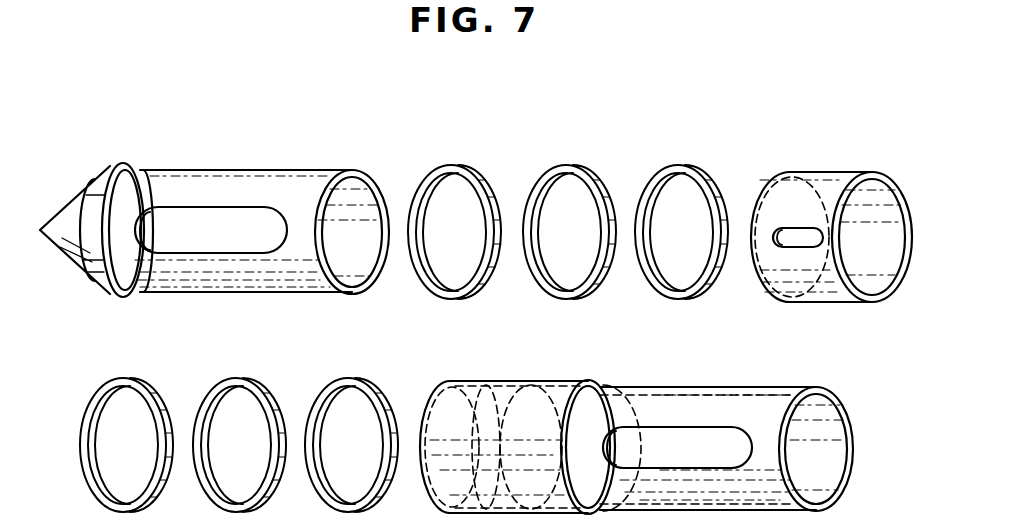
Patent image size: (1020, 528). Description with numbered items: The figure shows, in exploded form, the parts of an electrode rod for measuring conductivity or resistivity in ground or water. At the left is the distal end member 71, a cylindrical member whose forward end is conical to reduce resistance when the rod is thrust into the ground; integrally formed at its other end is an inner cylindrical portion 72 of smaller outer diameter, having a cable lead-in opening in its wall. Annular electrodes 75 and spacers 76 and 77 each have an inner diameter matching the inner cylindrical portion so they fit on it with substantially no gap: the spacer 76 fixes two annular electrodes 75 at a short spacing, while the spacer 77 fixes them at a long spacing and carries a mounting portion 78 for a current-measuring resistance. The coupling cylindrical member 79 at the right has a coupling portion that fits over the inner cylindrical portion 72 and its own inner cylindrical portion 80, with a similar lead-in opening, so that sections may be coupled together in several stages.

The distal end member 71 is at (57, 212).
The inner cylindrical portion 72 is at (216, 168).
The annular electrode 75 is at (458, 165).
The spacer 76 is at (570, 165).
The spacer 77 is at (830, 172).
The mounting portion 78 is at (796, 236).
The coupling cylindrical member 79 is at (507, 381).
The inner cylindrical portion 80 is at (650, 387).